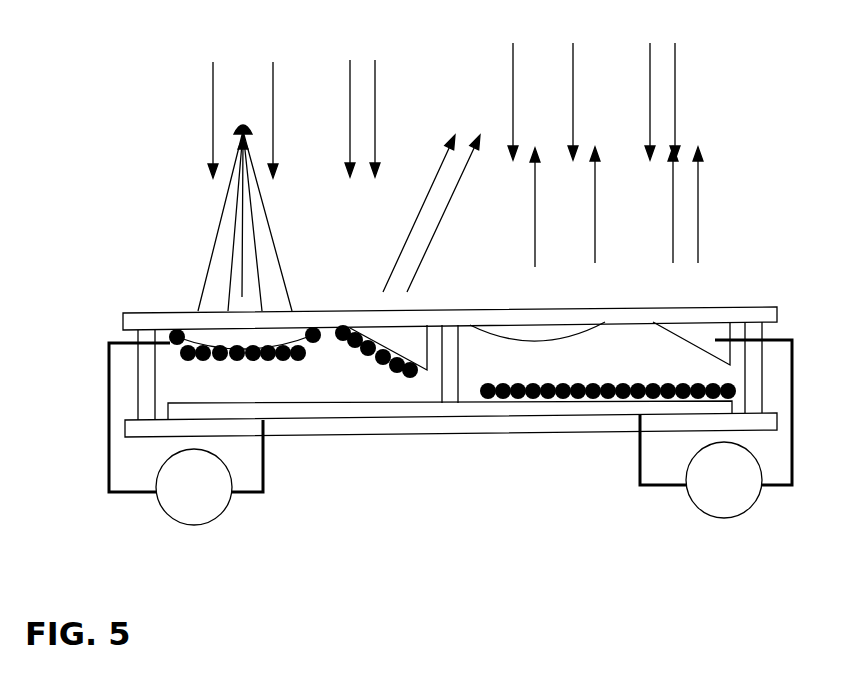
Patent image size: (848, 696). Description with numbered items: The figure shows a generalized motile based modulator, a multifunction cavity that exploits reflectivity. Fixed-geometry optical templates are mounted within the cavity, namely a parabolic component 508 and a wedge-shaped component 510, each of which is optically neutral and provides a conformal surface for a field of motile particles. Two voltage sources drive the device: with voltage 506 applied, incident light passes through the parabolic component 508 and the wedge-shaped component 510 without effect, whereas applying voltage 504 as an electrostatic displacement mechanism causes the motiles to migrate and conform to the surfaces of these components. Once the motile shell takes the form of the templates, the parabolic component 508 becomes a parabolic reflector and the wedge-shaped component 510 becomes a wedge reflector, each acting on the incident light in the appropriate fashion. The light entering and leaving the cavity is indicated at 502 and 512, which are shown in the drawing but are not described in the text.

The light rays 502 is at (549, 167).
The voltage 504 is at (158, 507).
The voltage 506 is at (747, 502).
The parabolic component 508 is at (518, 343).
The wedge-shaped component 510 is at (700, 343).
The light source 512 is at (208, 77).